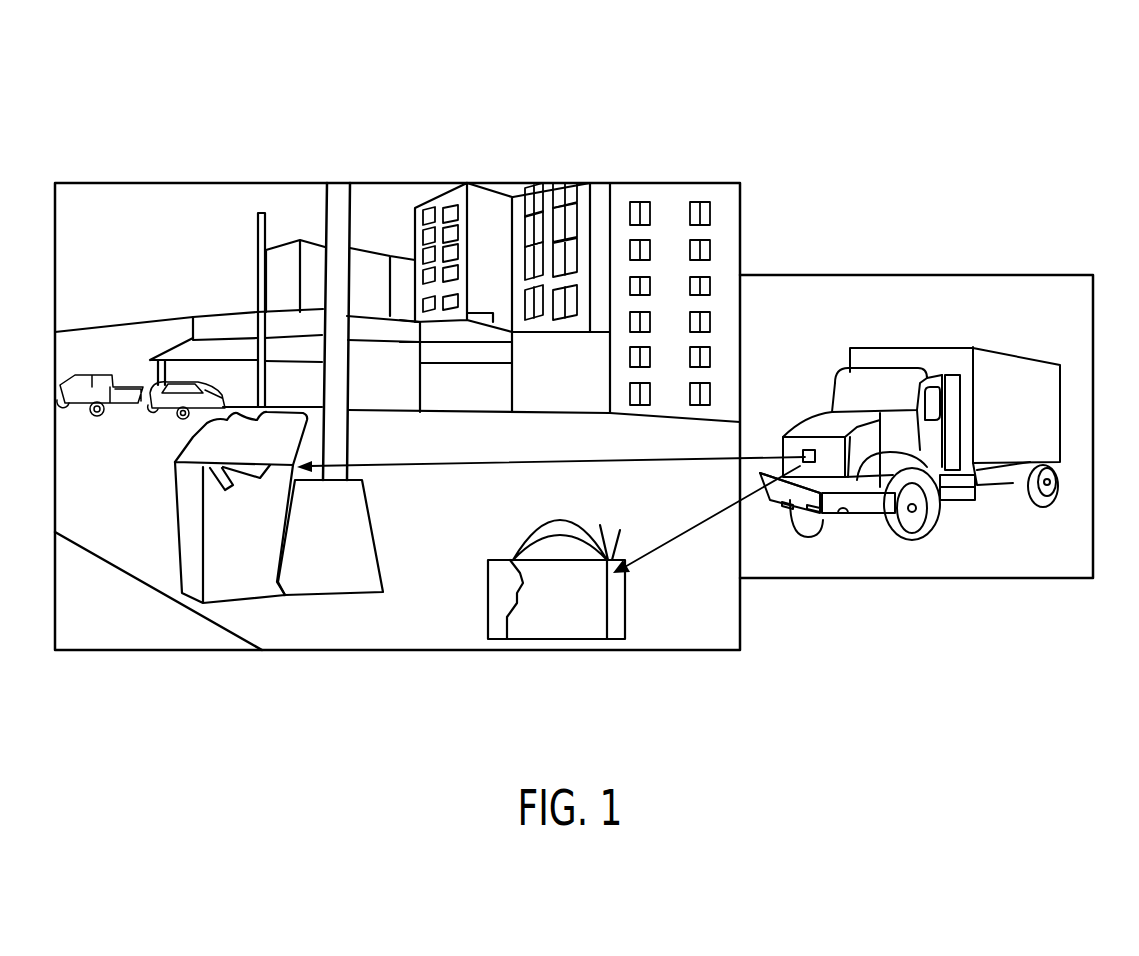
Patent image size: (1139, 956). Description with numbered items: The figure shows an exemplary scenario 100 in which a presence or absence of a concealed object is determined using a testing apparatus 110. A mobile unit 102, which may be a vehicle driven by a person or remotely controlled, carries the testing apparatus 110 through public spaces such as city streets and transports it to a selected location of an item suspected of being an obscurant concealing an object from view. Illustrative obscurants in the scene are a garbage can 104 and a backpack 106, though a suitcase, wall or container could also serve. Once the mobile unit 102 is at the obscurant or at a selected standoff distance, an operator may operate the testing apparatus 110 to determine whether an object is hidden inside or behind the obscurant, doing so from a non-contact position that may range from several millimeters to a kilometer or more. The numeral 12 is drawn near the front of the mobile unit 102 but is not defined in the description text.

The exemplary scenario 100 is at (1026, 118).
The mobile unit 102 is at (916, 397).
The garbage can 104 is at (213, 593).
The backpack 106 is at (557, 617).
The testing apparatus 110 is at (790, 422).
The sensor 12 is at (813, 477).